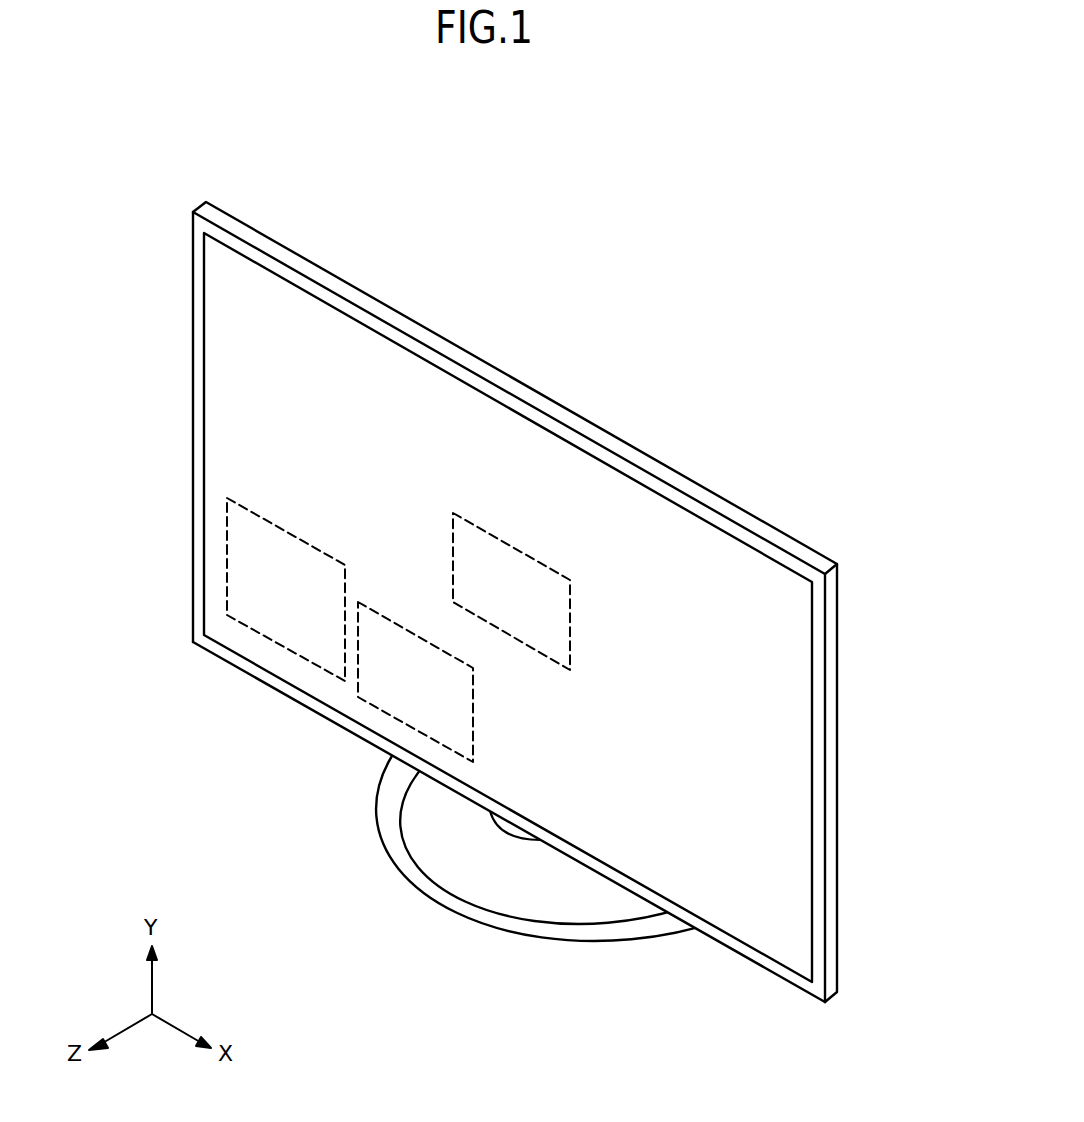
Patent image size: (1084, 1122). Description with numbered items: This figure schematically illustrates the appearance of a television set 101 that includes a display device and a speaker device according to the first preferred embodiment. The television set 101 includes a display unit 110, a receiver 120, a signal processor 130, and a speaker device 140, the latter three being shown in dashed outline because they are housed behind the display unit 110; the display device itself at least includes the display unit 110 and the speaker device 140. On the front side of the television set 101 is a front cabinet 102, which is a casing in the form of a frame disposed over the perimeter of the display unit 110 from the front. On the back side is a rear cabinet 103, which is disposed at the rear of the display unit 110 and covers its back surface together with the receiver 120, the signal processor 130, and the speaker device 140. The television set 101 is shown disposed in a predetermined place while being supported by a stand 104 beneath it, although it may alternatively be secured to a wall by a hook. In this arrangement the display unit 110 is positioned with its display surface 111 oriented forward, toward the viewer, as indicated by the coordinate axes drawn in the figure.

The television set 101 is at (248, 133).
The front cabinet 102 is at (753, 961).
The rear cabinet 103 is at (838, 781).
The stand 104 is at (570, 933).
The display unit 110 is at (508, 607).
The display surface 111 is at (718, 553).
The receiver 120 is at (278, 523).
The signal processor 130 is at (373, 612).
The speaker device 140 is at (500, 542).